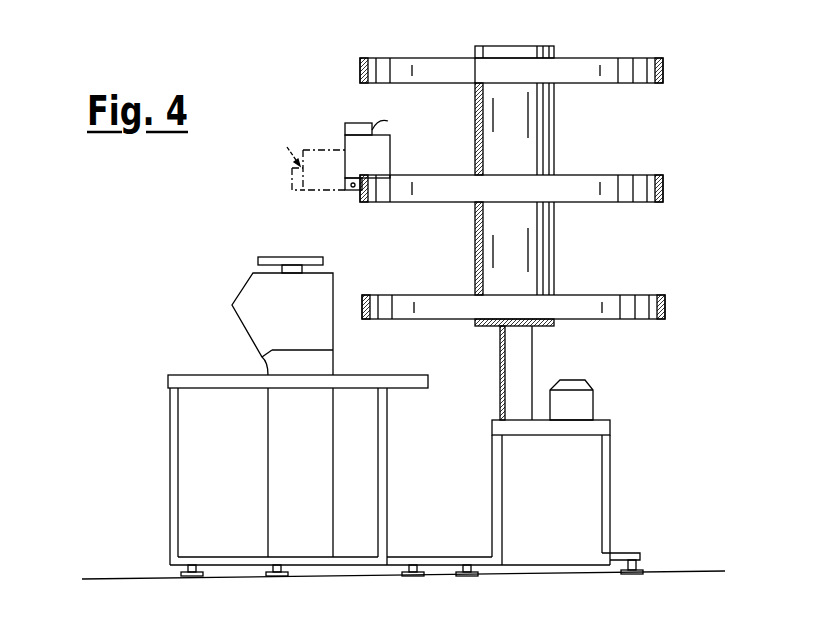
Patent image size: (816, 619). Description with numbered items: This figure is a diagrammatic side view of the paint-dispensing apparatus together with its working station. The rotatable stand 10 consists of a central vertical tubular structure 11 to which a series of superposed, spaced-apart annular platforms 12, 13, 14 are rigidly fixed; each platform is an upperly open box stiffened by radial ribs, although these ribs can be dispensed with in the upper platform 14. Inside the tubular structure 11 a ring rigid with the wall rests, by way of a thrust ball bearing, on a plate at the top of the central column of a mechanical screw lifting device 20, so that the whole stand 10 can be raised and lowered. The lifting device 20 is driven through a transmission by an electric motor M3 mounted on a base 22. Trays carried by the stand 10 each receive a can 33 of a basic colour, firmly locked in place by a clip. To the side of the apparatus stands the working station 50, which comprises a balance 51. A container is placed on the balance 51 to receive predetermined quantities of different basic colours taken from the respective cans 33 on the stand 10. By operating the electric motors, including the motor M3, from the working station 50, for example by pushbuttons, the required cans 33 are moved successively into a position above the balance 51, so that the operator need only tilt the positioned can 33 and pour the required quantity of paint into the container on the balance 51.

The rotatable stand 10 is at (574, 131).
The central vertical tubular structure 11 is at (540, 258).
The annular platform 12 is at (643, 284).
The annular platform 13 is at (646, 168).
The upper platform 14 is at (644, 48).
The mechanical screw lifting device 20 is at (547, 355).
The base 22 is at (612, 466).
The electric motor M3 is at (578, 405).
The can 33 is at (355, 148).
The working station 50 is at (155, 434).
The balance 51 is at (257, 316).